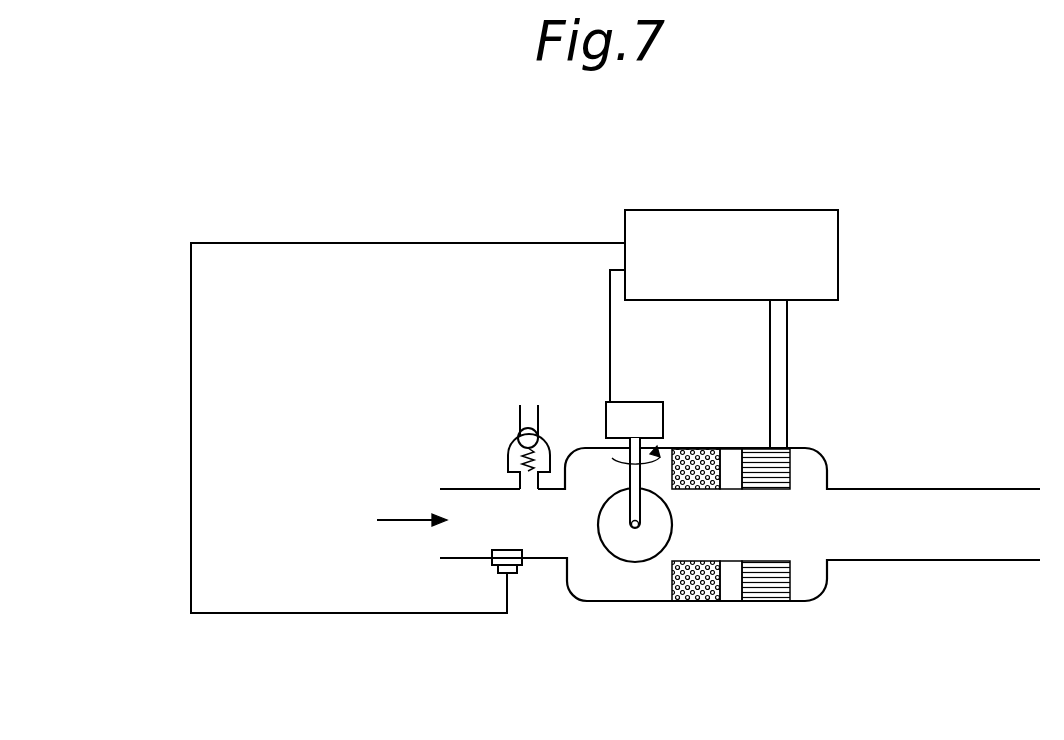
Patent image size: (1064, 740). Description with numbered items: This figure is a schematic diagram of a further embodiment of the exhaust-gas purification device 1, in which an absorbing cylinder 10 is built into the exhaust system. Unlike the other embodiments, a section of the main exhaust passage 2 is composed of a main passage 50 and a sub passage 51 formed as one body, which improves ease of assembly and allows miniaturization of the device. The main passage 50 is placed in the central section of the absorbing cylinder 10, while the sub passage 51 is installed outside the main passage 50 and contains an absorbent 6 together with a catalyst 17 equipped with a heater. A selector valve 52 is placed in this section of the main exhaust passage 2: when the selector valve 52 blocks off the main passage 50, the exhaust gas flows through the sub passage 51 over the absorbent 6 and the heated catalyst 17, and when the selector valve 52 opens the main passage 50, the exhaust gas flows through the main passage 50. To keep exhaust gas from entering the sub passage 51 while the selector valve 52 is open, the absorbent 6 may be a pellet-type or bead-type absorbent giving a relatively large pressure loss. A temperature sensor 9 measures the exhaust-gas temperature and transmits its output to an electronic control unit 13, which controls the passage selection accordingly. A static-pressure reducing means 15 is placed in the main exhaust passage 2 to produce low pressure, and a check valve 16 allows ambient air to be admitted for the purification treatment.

The exhaust-gas purification device 1 is at (492, 206).
The main exhaust passage 2 is at (476, 528).
The absorbent 6 is at (700, 449).
The temperature sensor 9 is at (522, 566).
The absorbing cylinder 10 is at (815, 395).
The electronic control unit 13 is at (718, 210).
The static-pressure reducing means 15 is at (606, 410).
The check valve 16 is at (518, 432).
The catalyst 17 is at (782, 462).
The main passage 50 is at (755, 543).
The sub passage 51 is at (730, 583).
The selector valve 52 is at (635, 552).